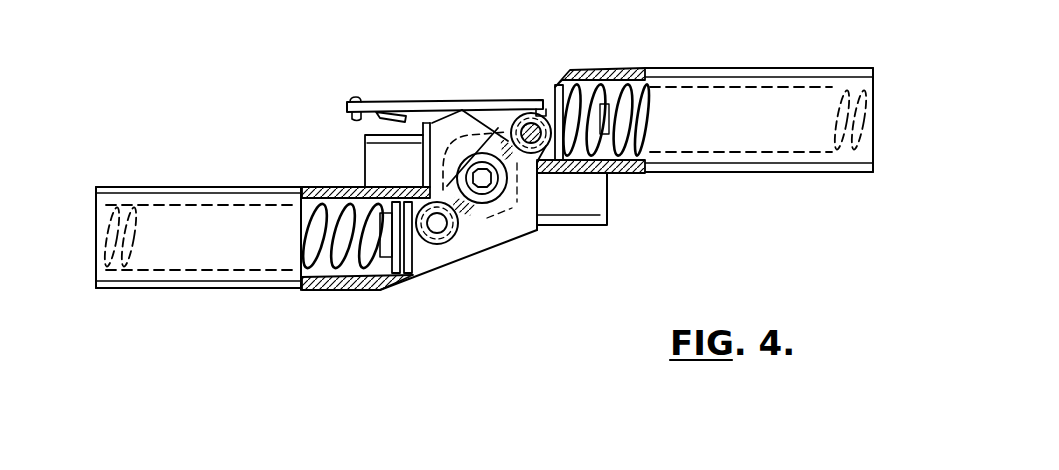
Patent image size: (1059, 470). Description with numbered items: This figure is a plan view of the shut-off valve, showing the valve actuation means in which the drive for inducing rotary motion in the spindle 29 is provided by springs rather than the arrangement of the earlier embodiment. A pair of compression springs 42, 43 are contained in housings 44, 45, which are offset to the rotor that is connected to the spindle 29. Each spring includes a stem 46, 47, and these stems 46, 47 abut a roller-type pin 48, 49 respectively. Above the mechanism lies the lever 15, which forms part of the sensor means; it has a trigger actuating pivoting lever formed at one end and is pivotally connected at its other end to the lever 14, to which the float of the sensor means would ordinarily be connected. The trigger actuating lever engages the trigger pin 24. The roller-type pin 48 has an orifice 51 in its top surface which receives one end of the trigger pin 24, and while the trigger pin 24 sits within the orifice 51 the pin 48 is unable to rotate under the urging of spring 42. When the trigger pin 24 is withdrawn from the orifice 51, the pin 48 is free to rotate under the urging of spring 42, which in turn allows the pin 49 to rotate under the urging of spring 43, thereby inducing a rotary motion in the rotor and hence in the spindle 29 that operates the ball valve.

The lever 14 is at (344, 116).
The lever 15 is at (446, 81).
The trigger pin 24 is at (513, 132).
The spindle 29 is at (497, 200).
The compression spring 42 is at (612, 72).
The compression spring 43 is at (338, 262).
The housing 44 is at (758, 87).
The housing 45 is at (170, 203).
The stem 46 is at (556, 83).
The stem 47 is at (407, 280).
The roller-type pin 48 is at (553, 173).
The roller-type pin 49 is at (437, 245).
The orifice 51 is at (529, 113).